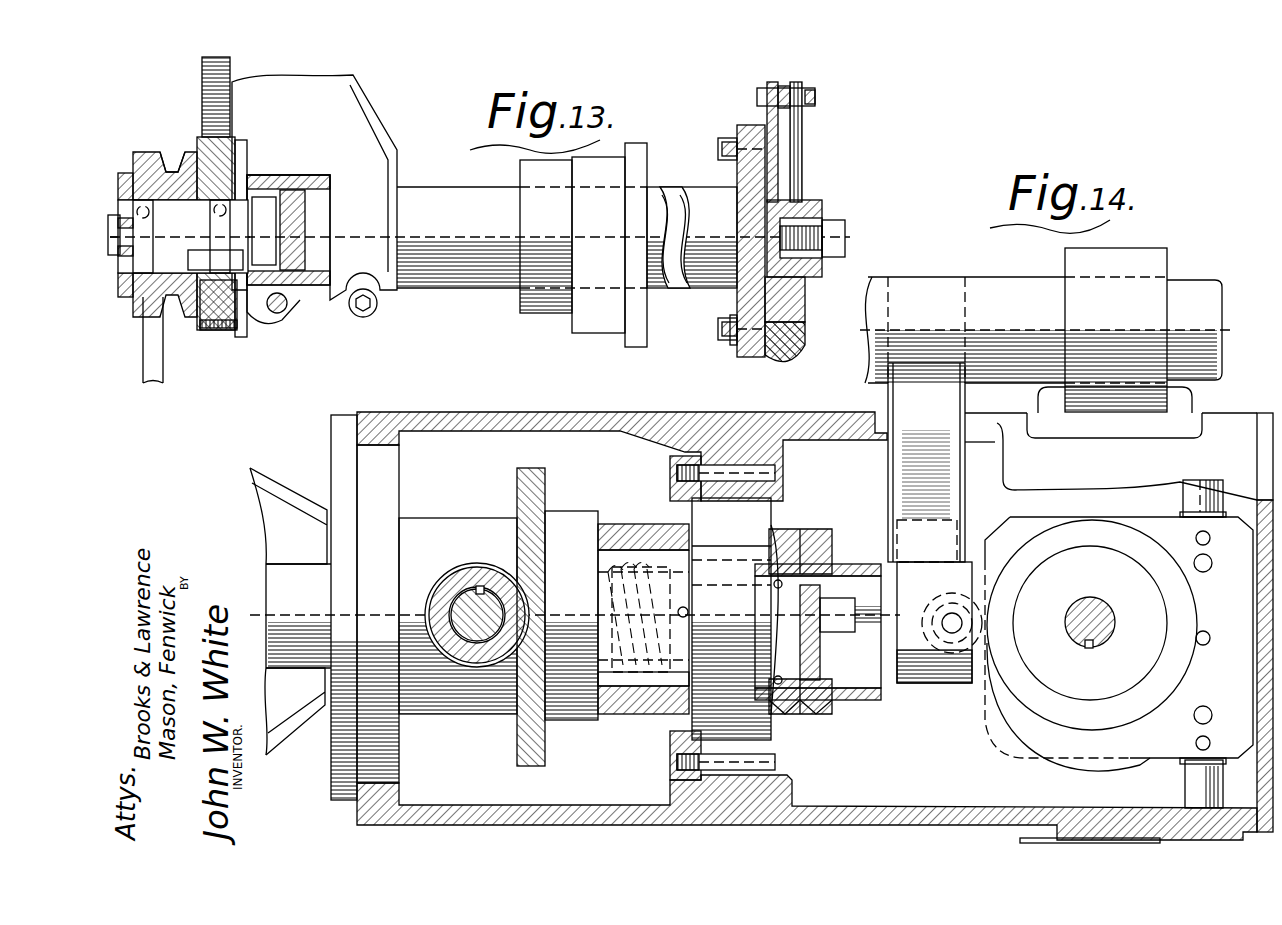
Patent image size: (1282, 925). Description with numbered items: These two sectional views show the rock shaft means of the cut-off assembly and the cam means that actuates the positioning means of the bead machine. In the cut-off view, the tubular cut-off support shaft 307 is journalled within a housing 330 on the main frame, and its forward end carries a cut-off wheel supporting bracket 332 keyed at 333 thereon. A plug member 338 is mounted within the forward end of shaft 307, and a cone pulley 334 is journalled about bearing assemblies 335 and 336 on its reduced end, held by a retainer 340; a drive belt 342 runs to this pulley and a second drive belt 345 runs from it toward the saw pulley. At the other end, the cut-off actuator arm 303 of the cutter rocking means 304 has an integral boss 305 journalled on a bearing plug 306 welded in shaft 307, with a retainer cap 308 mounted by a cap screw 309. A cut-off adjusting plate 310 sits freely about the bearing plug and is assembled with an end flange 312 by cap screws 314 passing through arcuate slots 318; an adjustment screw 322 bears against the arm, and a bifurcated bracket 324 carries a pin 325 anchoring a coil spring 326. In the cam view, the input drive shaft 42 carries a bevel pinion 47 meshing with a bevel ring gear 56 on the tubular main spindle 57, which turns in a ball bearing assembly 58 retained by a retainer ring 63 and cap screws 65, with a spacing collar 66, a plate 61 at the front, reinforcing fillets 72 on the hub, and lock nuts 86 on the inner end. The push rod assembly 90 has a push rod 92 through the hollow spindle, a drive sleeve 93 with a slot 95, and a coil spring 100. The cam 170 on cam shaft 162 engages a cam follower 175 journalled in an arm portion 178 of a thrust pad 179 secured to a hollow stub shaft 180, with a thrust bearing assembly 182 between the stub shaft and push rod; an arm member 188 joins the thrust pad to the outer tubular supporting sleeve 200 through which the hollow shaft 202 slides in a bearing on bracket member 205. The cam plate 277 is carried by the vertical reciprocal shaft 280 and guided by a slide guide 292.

In FIG. 14, the input drive shaft 42 is at (450, 598).
In FIG. 14, the bevel pinion 47 is at (470, 567).
In FIG. 14, the bevel ring gear 56 is at (548, 500).
In FIG. 14, the tubular main spindle 57 is at (618, 532).
In FIG. 14, the ball bearing assembly 58 is at (745, 531).
In FIG. 14, the plate 61 is at (340, 415).
In FIG. 14, the retainer ring 63 is at (683, 456).
In FIG. 14, the cap screws 65 is at (775, 480).
In FIG. 14, the spacing collar 66 is at (455, 527).
In FIG. 14, the reinforcing fillets 72 is at (283, 495).
In FIG. 14, the lock nuts 86 is at (795, 712).
In FIG. 14, the push rod assembly 90 is at (680, 609).
In FIG. 14, the push rod 92 is at (585, 599).
In FIG. 14, the drive sleeve 93 is at (662, 690).
In FIG. 14, the slot 95 is at (740, 616).
In FIG. 14, the coil spring 100 is at (612, 690).
In FIG. 14, the cam shaft 162 is at (1100, 591).
In FIG. 14, the cam 170 is at (1095, 772).
In FIG. 14, the cam follower 175 is at (987, 650).
In FIG. 14, the arm portion 178 is at (912, 636).
In FIG. 14, the thrust pad 179 is at (930, 683).
In FIG. 14, the hollow stub shaft 180 is at (848, 566).
In FIG. 14, the thrust bearing assembly 182 is at (797, 533).
In FIG. 14, the arm member 188 is at (893, 482).
In FIG. 14, the outer tubular supporting sleeve 200 is at (1024, 311).
In FIG. 14, the hollow shaft 202 is at (1207, 325).
In FIG. 14, the bracket member 205 is at (1155, 262).
In FIG. 14, the cam plate 277 is at (1242, 609).
In FIG. 14, the vertical reciprocal shaft 280 is at (1188, 498).
In FIG. 14, the slide guide 292 is at (1256, 673).
In FIG. 13, the cut-off actuator arm 303 is at (785, 185).
In FIG. 13, the cutter rocking means 304 is at (830, 143).
In FIG. 13, the boss 305 is at (822, 200).
In FIG. 13, the bearing plug 306 is at (822, 215).
In FIG. 13, the cut-off support shaft 307 is at (668, 190).
In FIG. 13, the retainer cap 308 is at (805, 268).
In FIG. 13, the cap screw 309 is at (845, 236).
In FIG. 13, the cut-off adjusting plate 310 is at (737, 295).
In FIG. 13, the end flange 312 is at (733, 345).
In FIG. 13, the cap screws 314 is at (720, 148).
In FIG. 13, the arcuate slots 318 is at (728, 138).
In FIG. 13, the adjustment screw 322 is at (780, 360).
In FIG. 13, the bifurcated bracket 324 is at (805, 122).
In FIG. 13, the pin 325 is at (815, 97).
In FIG. 13, the coil spring 326 is at (785, 88).
In FIG. 13, the housing 330 is at (585, 160).
In FIG. 13, the cut-off wheel supporting bracket 332 is at (385, 145).
In FIG. 13, the key 333 is at (285, 183).
In FIG. 13, the cone pulley 334 is at (170, 152).
In FIG. 13, the bearing assembly 335 is at (179, 236).
In FIG. 13, the bearing assembly 336 is at (222, 325).
In FIG. 13, the plug member 338 is at (200, 268).
In FIG. 13, the retainer 340 is at (123, 173).
In FIG. 13, the drive belt 342 is at (150, 383).
In FIG. 13, the second drive belt 345 is at (222, 110).